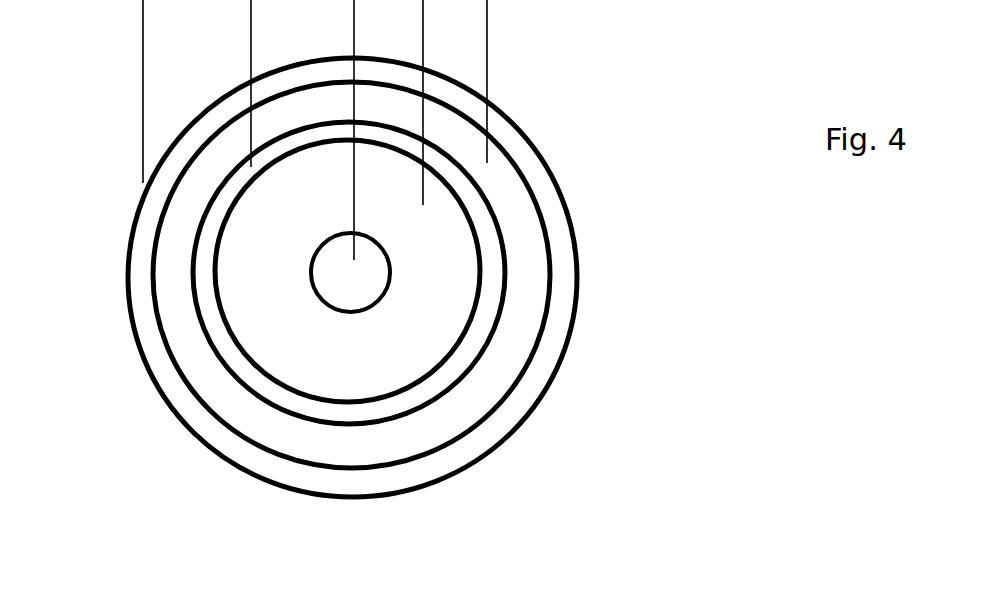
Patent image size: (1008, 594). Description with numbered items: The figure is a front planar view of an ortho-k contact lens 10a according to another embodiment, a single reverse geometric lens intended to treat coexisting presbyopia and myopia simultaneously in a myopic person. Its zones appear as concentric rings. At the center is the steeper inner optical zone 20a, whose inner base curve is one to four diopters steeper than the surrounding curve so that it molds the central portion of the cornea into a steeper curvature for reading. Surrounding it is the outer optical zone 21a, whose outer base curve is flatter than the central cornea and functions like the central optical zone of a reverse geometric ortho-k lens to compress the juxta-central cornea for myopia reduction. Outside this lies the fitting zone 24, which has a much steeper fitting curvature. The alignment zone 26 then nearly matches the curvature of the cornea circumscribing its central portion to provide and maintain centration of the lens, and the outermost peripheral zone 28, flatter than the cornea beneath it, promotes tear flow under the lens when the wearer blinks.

The ortho-k contact lens 10a is at (372, 263).
The inner optical zone 20a is at (352, 277).
The outer optical zone 21a is at (382, 378).
The fitting zone 24 is at (207, 279).
The alignment zone 26 is at (513, 210).
The peripheral zone 28 is at (518, 149).